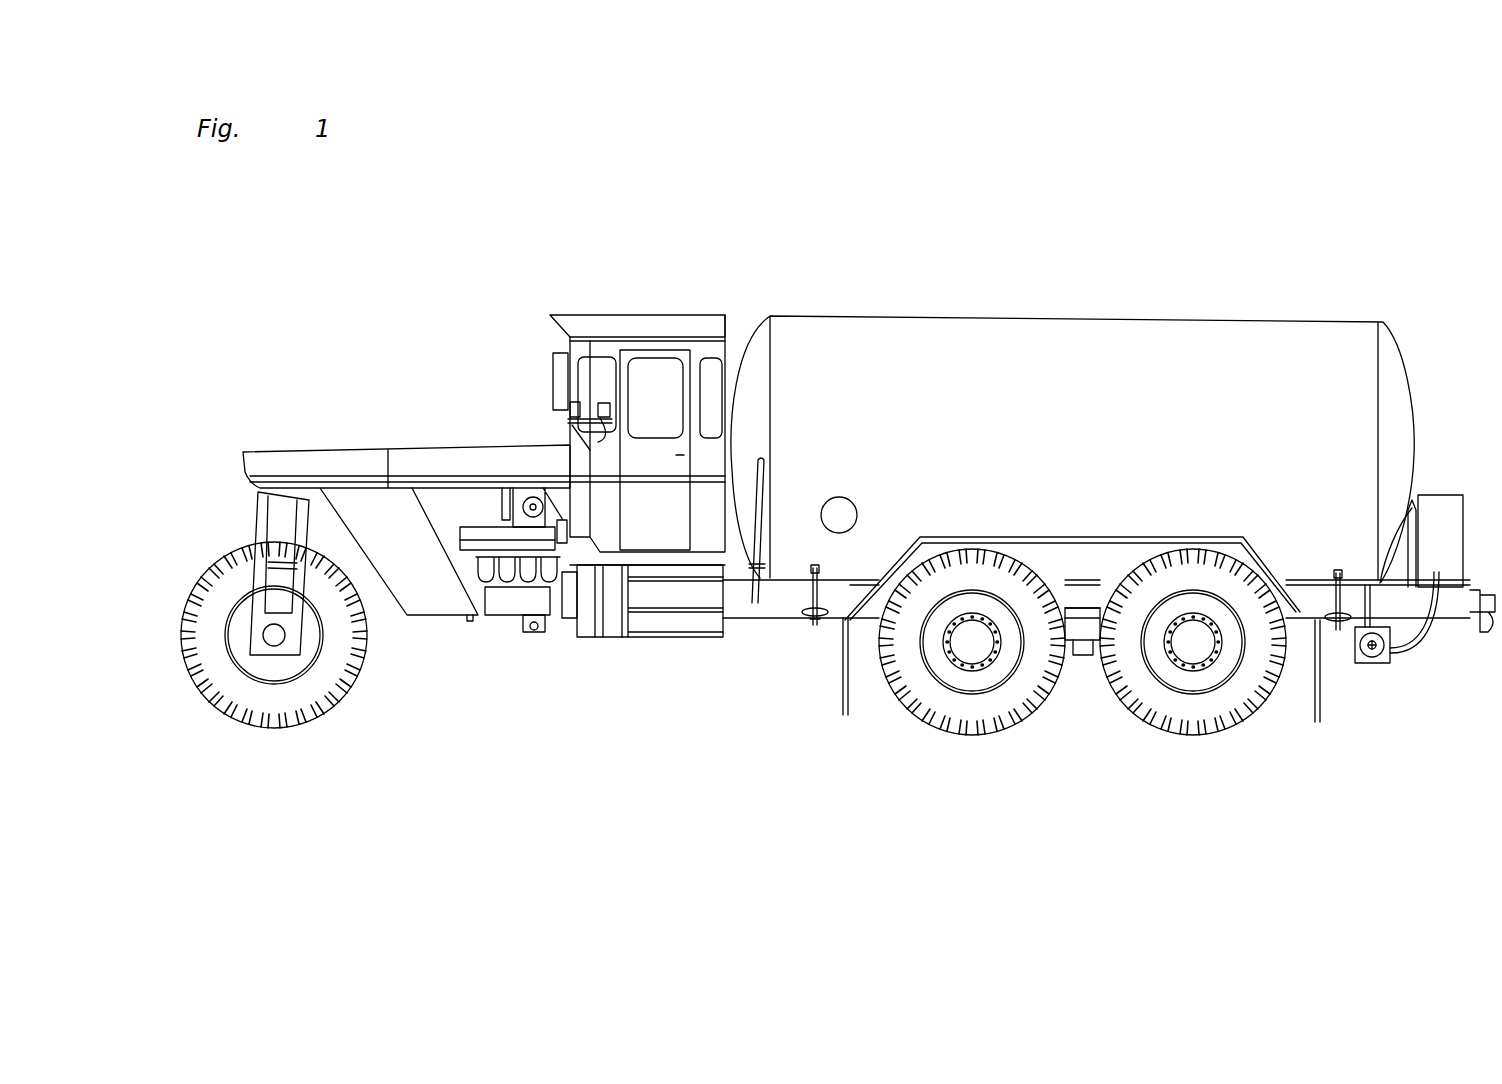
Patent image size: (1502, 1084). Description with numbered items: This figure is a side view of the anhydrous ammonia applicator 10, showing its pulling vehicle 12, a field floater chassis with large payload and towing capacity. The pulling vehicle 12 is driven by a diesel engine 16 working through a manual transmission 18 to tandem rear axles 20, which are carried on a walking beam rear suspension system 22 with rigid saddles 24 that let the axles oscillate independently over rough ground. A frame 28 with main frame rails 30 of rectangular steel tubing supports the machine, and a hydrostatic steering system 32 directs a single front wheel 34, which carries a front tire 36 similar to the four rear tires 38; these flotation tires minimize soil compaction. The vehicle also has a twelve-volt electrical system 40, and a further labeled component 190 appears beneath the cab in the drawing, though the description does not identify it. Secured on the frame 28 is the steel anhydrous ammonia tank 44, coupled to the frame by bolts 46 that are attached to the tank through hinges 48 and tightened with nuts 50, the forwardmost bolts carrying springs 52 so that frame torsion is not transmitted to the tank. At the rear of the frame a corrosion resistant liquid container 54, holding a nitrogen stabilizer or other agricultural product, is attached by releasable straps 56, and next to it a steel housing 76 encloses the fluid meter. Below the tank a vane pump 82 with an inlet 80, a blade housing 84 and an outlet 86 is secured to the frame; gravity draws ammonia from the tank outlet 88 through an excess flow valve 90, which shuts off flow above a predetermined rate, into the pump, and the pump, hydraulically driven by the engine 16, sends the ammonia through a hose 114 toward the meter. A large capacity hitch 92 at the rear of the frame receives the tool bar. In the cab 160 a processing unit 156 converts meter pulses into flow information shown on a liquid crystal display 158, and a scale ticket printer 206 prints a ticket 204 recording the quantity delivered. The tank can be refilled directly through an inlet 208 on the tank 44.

The anhydrous ammonia applicator 10 is at (412, 360).
The pulling vehicle 12 is at (557, 212).
The engine 16 is at (475, 565).
The transmission 18 is at (548, 632).
The tandem rear axles 20 is at (1192, 657).
The rear suspension system 22 is at (1075, 672).
The rigid saddles 24 is at (1090, 655).
The frame 28 is at (778, 635).
The main frame rails 30 is at (832, 620).
The hydrostatic steering system 32 is at (250, 483).
The front wheel 34 is at (362, 730).
The front tire 36 is at (272, 730).
The rear tires 38 is at (955, 734).
The electrical system 40 is at (522, 612).
The anhydrous ammonia tank 44 is at (1120, 405).
The bolts 46 is at (1338, 610).
The hinges 48 is at (813, 568).
The nuts 50 is at (808, 616).
The springs 52 is at (826, 600).
The liquid container 54 is at (1412, 505).
The straps 56 is at (1440, 495).
The housing 76 is at (1448, 526).
The inlet 80 is at (1357, 640).
The pump 82 is at (1372, 665).
The blade housing 84 is at (1387, 655).
The outlet 86 is at (1395, 658).
The outlet 88 is at (1380, 580).
The excess flow valve 90 is at (1338, 572).
The hitch 92 is at (1478, 620).
The hose 114 is at (1408, 645).
The processing unit 156 is at (573, 397).
The liquid crystal display 158 is at (578, 425).
The cab 160 is at (583, 316).
The engine 190 is at (606, 628).
The ticket 204 is at (600, 405).
The scale ticket printer 206 is at (612, 405).
The inlet 208 is at (858, 505).